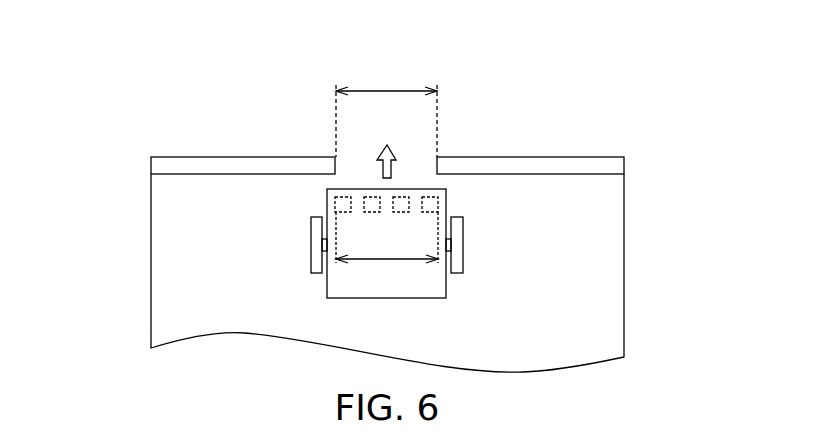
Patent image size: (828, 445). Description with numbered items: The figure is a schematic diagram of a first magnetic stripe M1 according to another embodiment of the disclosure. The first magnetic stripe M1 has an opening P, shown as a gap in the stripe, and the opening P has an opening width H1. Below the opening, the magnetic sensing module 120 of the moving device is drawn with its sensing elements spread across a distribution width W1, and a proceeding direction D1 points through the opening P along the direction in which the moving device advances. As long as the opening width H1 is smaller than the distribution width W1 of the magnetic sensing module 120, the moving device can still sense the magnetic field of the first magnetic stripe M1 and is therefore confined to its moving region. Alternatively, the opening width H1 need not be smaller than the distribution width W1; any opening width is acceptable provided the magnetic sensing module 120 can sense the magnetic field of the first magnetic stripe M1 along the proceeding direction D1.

The magnetic sensing module 120 is at (335, 203).
The first magnetic stripe M1 is at (533, 165).
The opening P is at (410, 165).
The opening width H1 is at (386, 79).
The distribution width W1 is at (387, 248).
The proceeding direction D1 is at (388, 148).